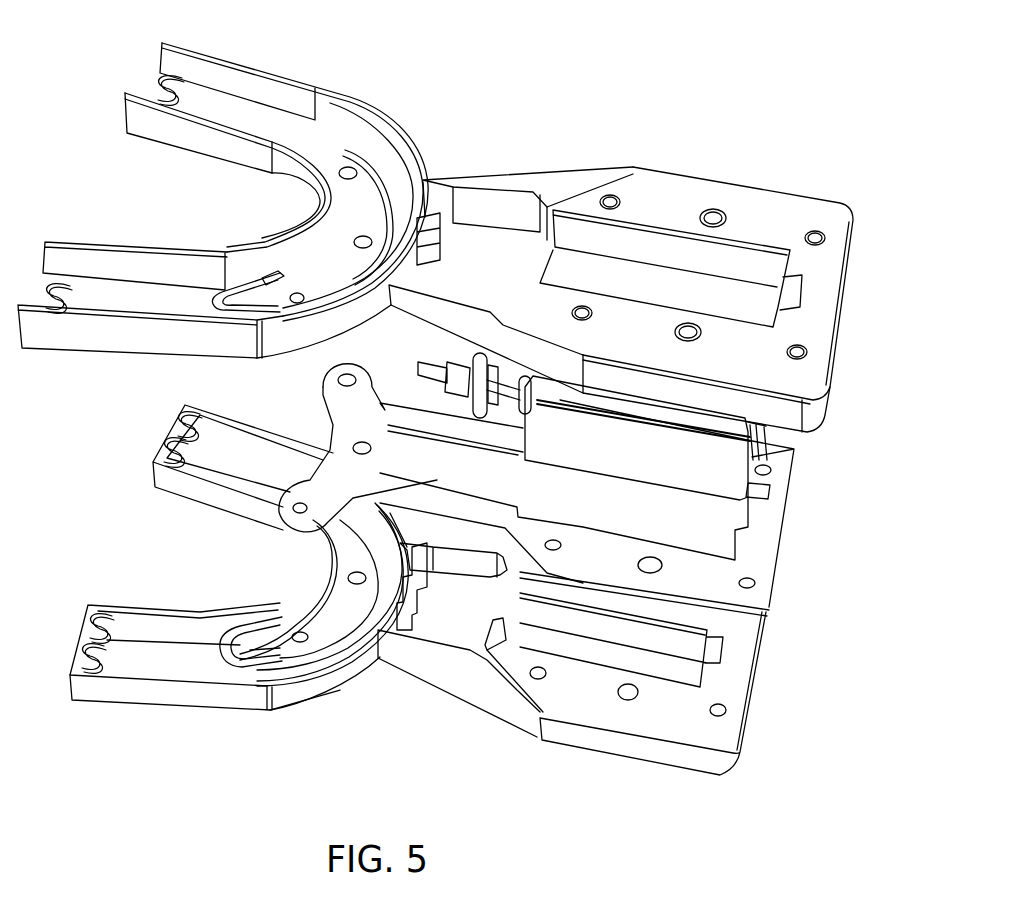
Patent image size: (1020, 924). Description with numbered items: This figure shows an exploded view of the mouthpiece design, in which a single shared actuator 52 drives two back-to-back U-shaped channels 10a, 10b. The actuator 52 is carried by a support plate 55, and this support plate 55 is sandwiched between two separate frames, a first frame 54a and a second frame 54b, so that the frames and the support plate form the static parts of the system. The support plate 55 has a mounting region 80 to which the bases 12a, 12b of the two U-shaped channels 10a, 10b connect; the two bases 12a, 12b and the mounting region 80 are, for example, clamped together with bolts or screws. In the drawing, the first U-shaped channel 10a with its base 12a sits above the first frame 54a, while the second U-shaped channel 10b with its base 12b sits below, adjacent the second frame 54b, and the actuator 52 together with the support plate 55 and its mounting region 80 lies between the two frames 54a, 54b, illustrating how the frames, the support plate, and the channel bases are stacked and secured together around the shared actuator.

The U-shaped channel 10a is at (324, 74).
The U-shaped channel 10b is at (188, 718).
The base 12a is at (370, 195).
The base 12b is at (317, 617).
The actuator 52 is at (747, 467).
The first frame 54a is at (776, 193).
The second frame 54b is at (750, 697).
The support plate 55 is at (787, 517).
The mounting region 80 is at (333, 428).